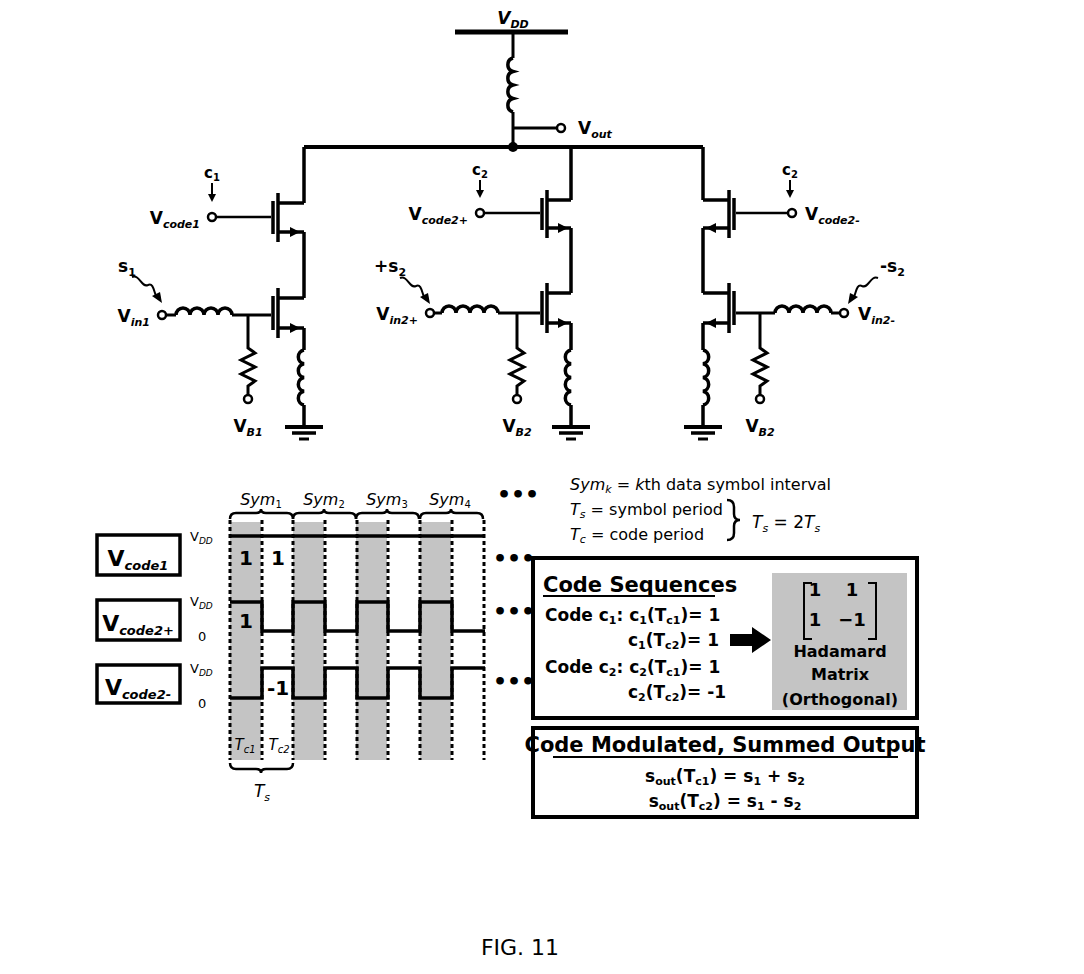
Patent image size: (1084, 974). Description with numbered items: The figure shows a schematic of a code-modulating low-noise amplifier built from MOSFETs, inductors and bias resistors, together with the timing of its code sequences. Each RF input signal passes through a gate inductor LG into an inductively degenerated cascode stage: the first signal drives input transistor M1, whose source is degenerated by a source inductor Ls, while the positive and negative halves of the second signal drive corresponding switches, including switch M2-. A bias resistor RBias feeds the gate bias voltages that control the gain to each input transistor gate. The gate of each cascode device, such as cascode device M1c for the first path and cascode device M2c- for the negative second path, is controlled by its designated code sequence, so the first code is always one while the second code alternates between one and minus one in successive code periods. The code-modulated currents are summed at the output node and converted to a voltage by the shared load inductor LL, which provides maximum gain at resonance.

The load inductor LL is at (528, 85).
The cascode device M1c is at (310, 217).
The MOSFET M1 is at (308, 313).
The cascode device M2c- is at (694, 214).
The switch M2- is at (698, 308).
The gate inductor LG is at (503, 296).
The source degeneration inductor Ls is at (503, 377).
The bias resistor RBias is at (508, 366).